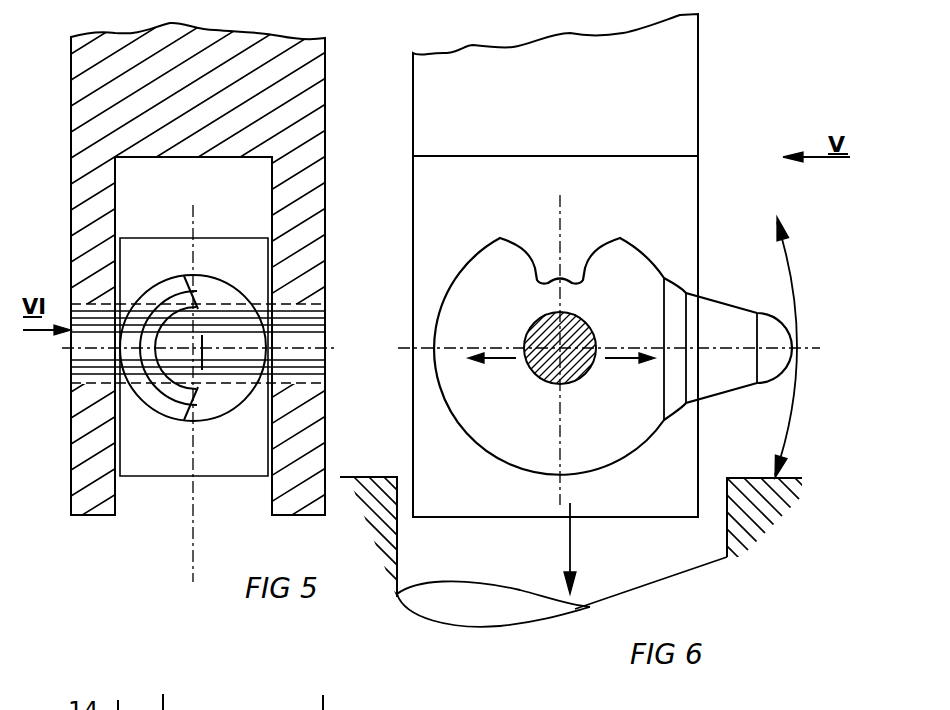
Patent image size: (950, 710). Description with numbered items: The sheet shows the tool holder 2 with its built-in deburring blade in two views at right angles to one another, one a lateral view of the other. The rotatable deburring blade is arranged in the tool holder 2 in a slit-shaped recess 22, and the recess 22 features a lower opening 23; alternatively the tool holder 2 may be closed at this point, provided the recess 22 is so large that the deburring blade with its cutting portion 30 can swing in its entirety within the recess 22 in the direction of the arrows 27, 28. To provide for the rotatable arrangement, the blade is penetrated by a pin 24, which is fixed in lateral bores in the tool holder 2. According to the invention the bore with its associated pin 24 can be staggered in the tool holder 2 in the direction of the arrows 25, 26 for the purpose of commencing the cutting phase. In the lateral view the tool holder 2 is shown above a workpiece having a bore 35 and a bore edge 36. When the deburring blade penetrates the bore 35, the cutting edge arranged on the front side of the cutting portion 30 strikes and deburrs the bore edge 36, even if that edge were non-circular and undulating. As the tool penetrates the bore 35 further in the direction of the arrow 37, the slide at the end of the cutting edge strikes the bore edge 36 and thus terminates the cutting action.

In FIG. 5, the tool holder 2 is at (303, 120).
In FIG. 5, the slit-shaped recess 22 is at (238, 205).
In FIG. 5, the lower opening 23 is at (141, 497).
In FIG. 5, the pin 24 is at (292, 331).
In FIG. 6, the pin 24 is at (580, 366).
In FIG. 6, the arrow 25 is at (505, 350).
In FIG. 6, the arrow 26 is at (618, 350).
In FIG. 6, the arrow 27 is at (792, 276).
In FIG. 6, the arrow 28 is at (794, 402).
In FIG. 6, the cutting portion 30 is at (715, 322).
In FIG. 6, the bore 35 is at (477, 567).
In FIG. 6, the bore edge 36 is at (394, 474).
In FIG. 6, the arrow 37 is at (563, 548).